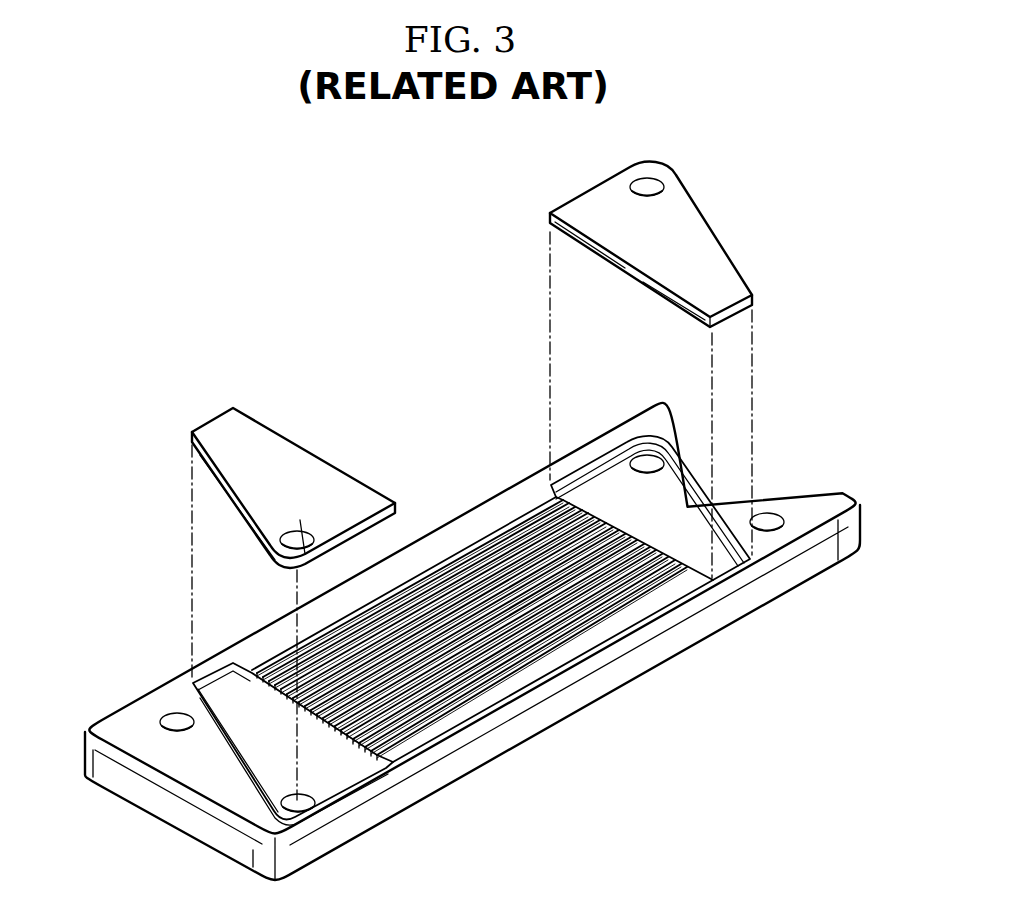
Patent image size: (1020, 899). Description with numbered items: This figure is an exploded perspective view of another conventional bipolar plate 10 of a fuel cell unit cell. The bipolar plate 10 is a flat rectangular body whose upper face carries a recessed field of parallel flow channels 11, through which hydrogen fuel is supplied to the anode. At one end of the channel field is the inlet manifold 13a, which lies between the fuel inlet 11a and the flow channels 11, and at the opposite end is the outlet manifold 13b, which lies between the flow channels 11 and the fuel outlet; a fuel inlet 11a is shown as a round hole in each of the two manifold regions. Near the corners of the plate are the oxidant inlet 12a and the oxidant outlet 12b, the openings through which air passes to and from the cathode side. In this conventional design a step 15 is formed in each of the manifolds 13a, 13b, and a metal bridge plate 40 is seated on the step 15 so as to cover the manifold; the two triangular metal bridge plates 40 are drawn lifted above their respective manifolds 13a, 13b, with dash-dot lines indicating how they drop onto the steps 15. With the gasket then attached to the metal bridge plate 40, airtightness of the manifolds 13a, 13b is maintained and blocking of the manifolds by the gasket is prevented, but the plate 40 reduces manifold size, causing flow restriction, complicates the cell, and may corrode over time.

The bipolar plate 10 is at (477, 623).
The flow channel 11 is at (600, 622).
The fuel inlet 11a is at (318, 805).
The oxidant inlet 12a is at (168, 720).
The oxidant outlet 12b is at (780, 518).
The inlet manifold 13a is at (312, 760).
The outlet manifold 13b is at (625, 505).
The step 15 is at (556, 478).
The metal bridge plate 40 is at (590, 208).